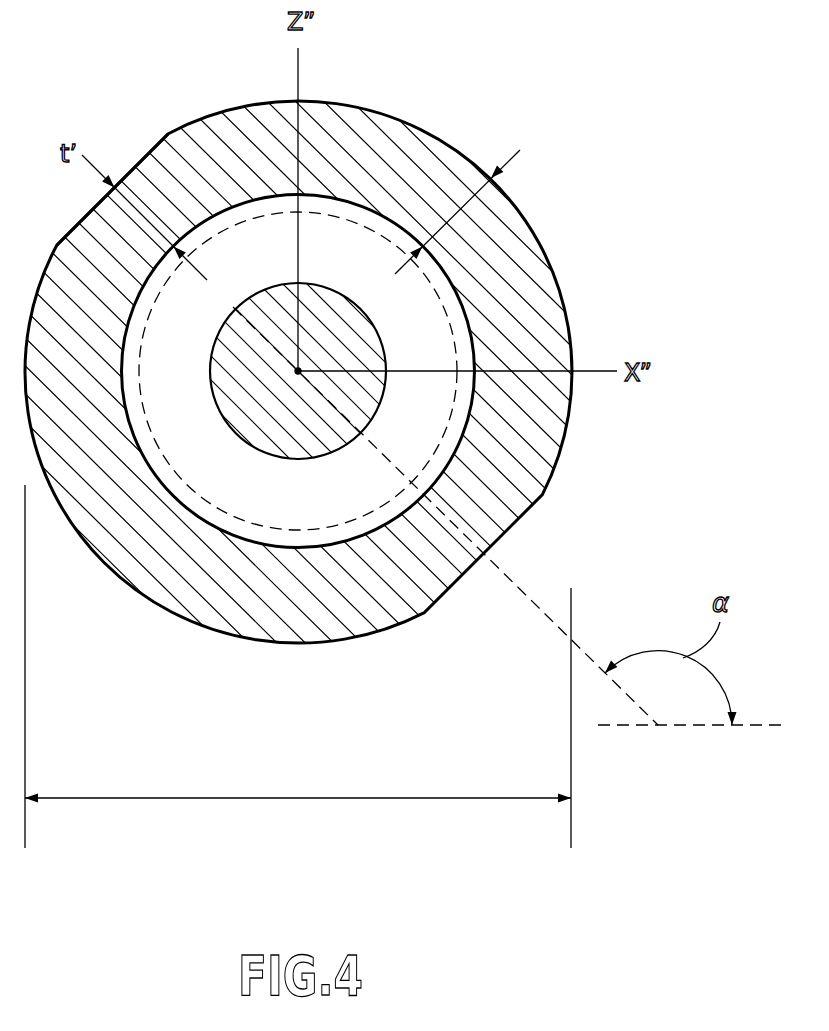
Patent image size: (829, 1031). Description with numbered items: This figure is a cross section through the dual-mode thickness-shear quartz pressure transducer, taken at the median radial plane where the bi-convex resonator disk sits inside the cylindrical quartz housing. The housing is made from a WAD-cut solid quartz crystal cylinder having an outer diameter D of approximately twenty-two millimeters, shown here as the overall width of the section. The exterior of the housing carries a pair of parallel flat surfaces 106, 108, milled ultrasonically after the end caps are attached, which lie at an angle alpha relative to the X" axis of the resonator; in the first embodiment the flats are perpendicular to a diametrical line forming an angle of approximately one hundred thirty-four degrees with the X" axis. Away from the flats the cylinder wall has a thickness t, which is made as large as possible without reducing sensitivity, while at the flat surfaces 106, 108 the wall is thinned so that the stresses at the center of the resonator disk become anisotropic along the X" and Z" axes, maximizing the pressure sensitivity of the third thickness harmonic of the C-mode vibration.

The flat surface 106 is at (510, 520).
The flat surface 108 is at (160, 142).
The wall thickness t is at (462, 202).
The outer diameter D is at (310, 798).